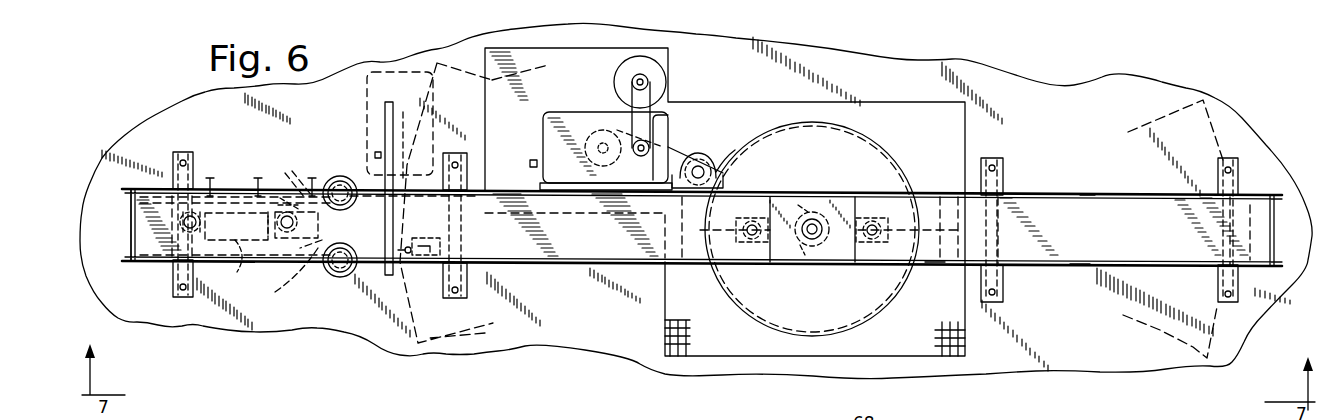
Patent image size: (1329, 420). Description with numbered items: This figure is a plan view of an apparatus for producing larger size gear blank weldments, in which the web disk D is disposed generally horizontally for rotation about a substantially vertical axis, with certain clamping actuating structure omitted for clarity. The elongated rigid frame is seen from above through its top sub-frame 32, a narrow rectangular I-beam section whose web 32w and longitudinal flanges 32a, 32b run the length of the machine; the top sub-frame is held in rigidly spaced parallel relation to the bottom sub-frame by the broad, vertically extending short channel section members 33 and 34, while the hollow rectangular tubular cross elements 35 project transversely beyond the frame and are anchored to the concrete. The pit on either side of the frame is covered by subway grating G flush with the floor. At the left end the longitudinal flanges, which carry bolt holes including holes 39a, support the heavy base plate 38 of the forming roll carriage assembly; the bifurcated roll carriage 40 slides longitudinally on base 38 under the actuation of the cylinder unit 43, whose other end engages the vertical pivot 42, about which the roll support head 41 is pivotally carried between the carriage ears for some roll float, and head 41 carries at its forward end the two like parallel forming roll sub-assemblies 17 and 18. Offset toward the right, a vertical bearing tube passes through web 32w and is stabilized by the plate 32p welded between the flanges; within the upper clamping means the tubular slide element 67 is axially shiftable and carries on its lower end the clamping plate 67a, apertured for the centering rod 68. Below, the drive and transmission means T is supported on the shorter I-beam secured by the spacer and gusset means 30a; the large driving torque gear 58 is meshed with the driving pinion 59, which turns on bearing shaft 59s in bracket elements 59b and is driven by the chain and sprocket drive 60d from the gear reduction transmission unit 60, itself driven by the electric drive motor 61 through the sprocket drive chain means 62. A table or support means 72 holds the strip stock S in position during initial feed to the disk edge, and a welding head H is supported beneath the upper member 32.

The forming roll sub-assembly 17 is at (340, 277).
The forming roll sub-assembly 18 is at (340, 177).
The spacer and gusset means 30a is at (933, 262).
The top sub-frame 32 is at (1162, 214).
The longitudinal flange 32a is at (1078, 265).
The longitudinal flange 32b is at (1087, 195).
The plate 32p is at (787, 200).
The web 32w is at (1124, 236).
The channel section member 33 is at (1278, 194).
The channel section member 34 is at (128, 260).
The tubular cross element 35 is at (183, 152).
The base plate 38 is at (274, 183).
The bolt 39a is at (258, 180).
The roll carriage 40 is at (284, 175).
The roll support head 41 is at (285, 260).
The vertical pivot 42 is at (288, 263).
The cylinder unit 43 is at (238, 240).
The driving torque gear 58 is at (890, 140).
The driving pinion 59 is at (708, 160).
The bracket element 59b is at (732, 176).
The bearing shaft 59s is at (716, 141).
The gear reduction transmission unit 60 is at (565, 112).
The chain and sprocket drive 60d is at (676, 138).
The electric drive motor 61 is at (617, 76).
The sprocket drive chain means 62 is at (633, 112).
The tubular slide element 67 is at (822, 222).
The clamping plate 67a is at (805, 255).
The centering rod 68 is at (814, 240).
The table or support means 72 is at (367, 118).
The strip stock S is at (381, 177).
The web plate or disk D is at (406, 129).
The welding head H is at (433, 238).
The drive and transmission means T is at (689, 104).
The subway grating G is at (665, 337).